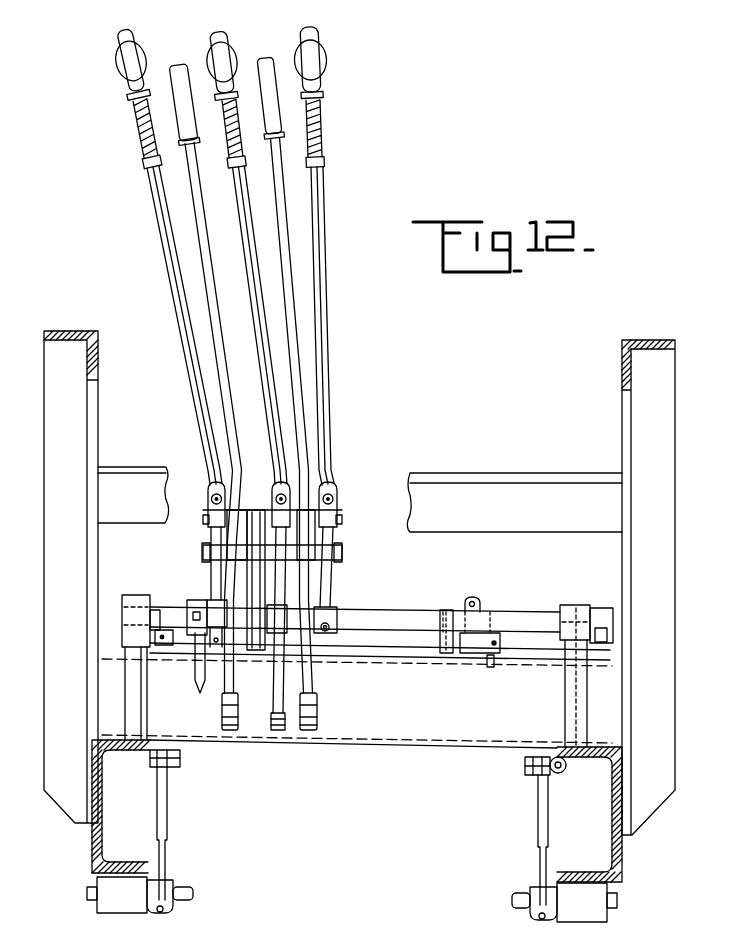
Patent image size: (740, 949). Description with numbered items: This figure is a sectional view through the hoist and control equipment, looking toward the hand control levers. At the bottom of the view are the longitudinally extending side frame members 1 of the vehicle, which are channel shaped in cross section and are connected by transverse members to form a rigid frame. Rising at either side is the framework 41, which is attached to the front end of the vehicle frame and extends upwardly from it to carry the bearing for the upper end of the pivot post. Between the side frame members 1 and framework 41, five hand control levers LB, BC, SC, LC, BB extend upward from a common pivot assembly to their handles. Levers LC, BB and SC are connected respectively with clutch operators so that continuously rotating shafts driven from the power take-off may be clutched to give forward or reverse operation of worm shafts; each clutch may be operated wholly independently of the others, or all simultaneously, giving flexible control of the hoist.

The hand control lever LB is at (128, 38).
The hand control lever BC is at (178, 64).
The hand control lever SC is at (215, 36).
The hand control lever LC is at (267, 60).
The hand control lever BB is at (313, 85).
The framework 41 is at (100, 355).
The side frame member 1 is at (90, 846).